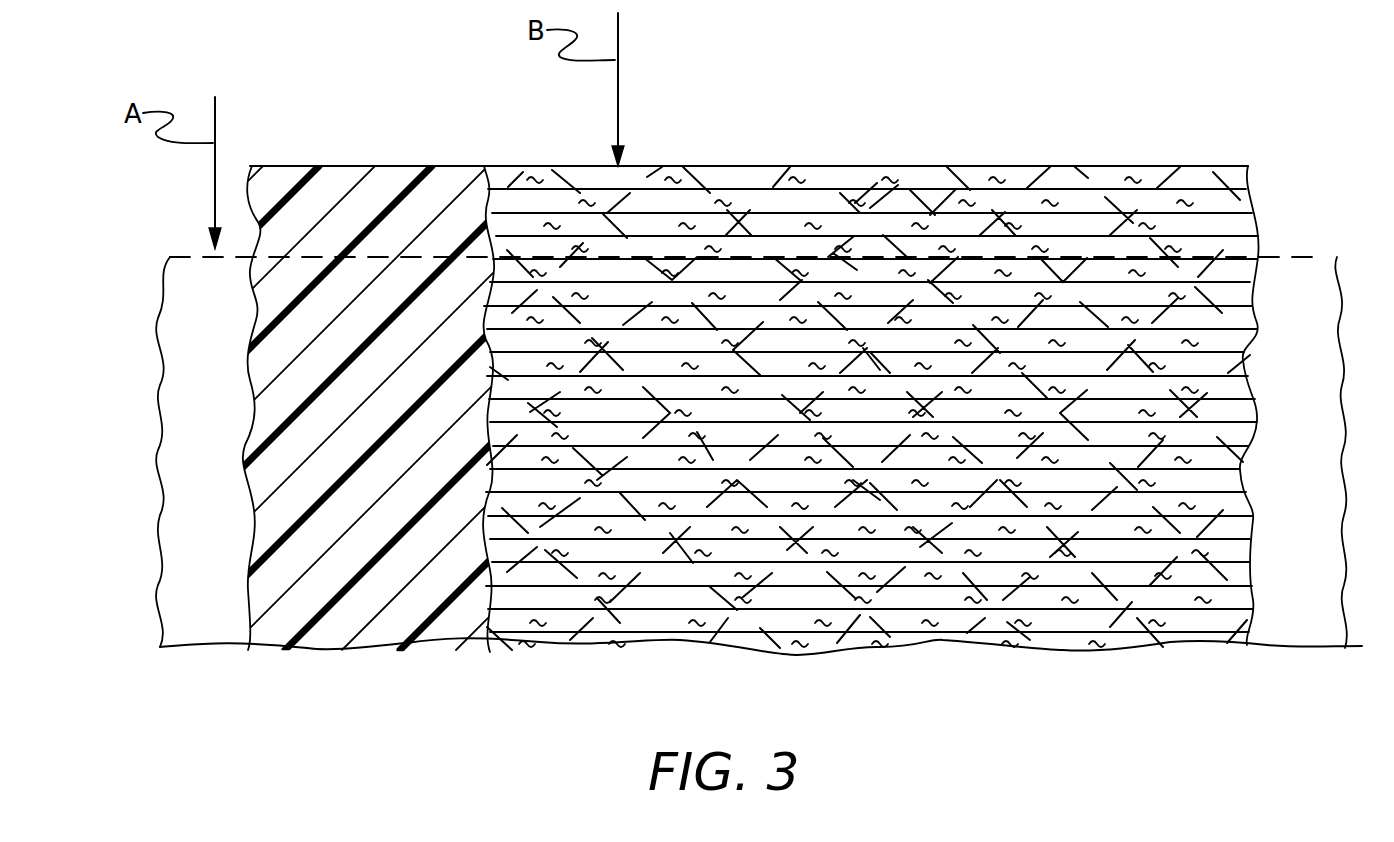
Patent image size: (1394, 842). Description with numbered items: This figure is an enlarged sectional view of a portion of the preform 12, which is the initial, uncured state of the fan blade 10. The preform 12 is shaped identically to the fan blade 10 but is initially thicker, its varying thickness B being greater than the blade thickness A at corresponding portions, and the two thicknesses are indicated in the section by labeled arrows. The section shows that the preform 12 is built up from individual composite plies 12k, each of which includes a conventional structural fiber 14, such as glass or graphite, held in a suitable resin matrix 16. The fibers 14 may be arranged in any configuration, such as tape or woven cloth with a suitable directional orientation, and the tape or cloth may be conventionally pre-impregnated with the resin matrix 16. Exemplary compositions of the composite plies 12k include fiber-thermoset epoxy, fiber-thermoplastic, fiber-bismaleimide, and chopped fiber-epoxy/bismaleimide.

The fan blade 10 is at (1287, 257).
The preform 12 is at (1219, 165).
The composite plies 12k is at (937, 203).
The structural fiber 14 is at (683, 167).
The resin matrix 16 is at (422, 386).